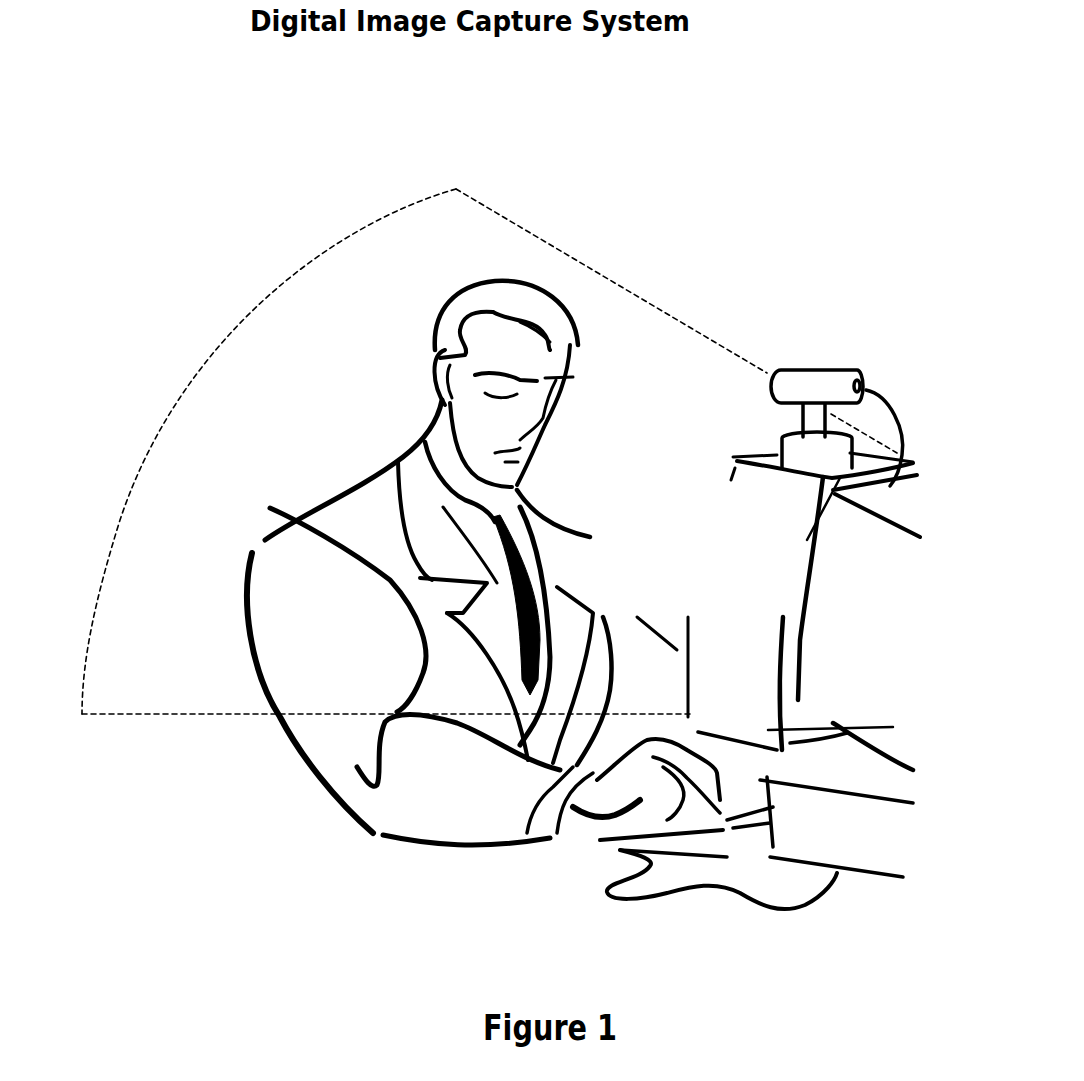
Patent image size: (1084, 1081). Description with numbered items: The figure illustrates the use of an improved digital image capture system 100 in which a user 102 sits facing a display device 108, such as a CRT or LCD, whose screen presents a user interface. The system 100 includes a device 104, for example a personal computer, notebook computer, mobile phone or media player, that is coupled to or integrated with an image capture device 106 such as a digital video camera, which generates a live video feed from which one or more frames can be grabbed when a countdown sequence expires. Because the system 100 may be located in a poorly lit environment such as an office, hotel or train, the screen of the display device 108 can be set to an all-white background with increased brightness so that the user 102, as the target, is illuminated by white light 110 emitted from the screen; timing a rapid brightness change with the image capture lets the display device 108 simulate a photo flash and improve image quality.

The digital image capture system 100 is at (497, 71).
The user 102 is at (364, 643).
The device 104 is at (867, 847).
The image capture device 106 is at (830, 370).
The display device 108 is at (890, 645).
The white light 110 is at (469, 197).